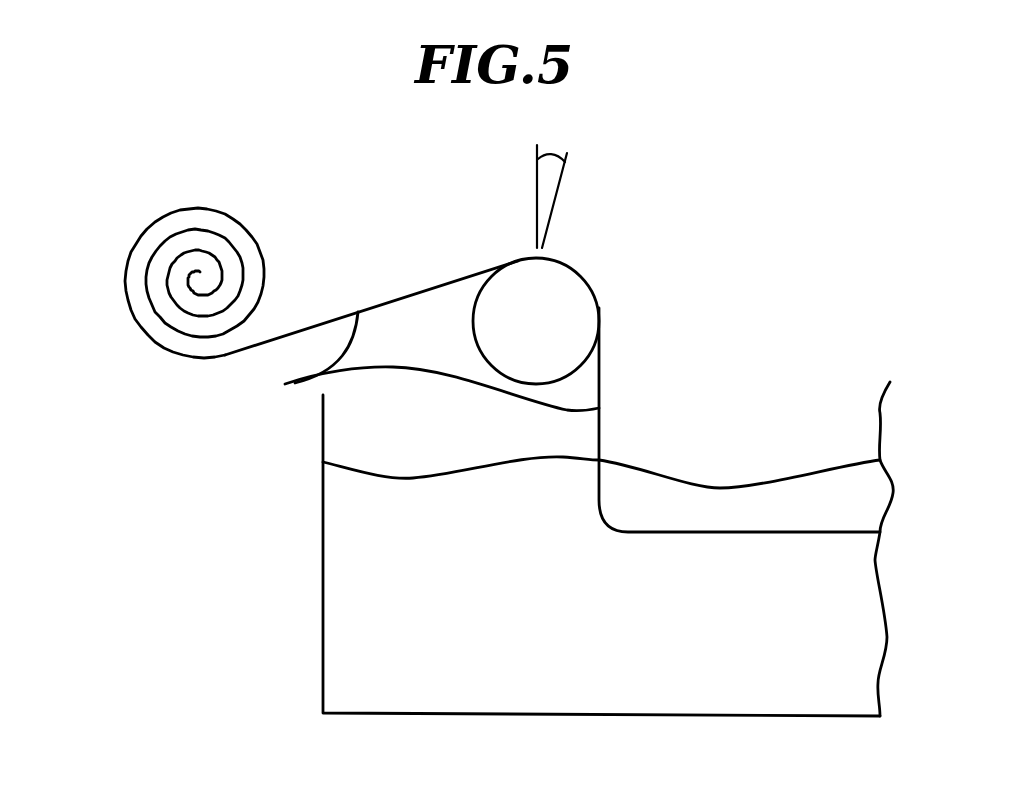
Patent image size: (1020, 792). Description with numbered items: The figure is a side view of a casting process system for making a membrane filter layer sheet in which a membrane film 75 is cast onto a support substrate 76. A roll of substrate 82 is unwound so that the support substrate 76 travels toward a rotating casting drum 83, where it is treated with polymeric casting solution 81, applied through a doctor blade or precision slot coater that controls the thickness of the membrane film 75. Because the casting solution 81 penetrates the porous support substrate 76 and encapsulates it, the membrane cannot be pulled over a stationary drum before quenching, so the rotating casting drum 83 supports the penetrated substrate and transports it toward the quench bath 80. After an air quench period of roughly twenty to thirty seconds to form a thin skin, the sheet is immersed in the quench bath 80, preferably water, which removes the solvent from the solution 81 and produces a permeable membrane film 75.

The membrane film 75 is at (600, 375).
The support substrate 76 is at (392, 297).
The quench bath 80 is at (717, 637).
The polymeric casting solution 81 is at (545, 192).
The roll of substrate 82 is at (136, 231).
The casting drum 83 is at (557, 336).